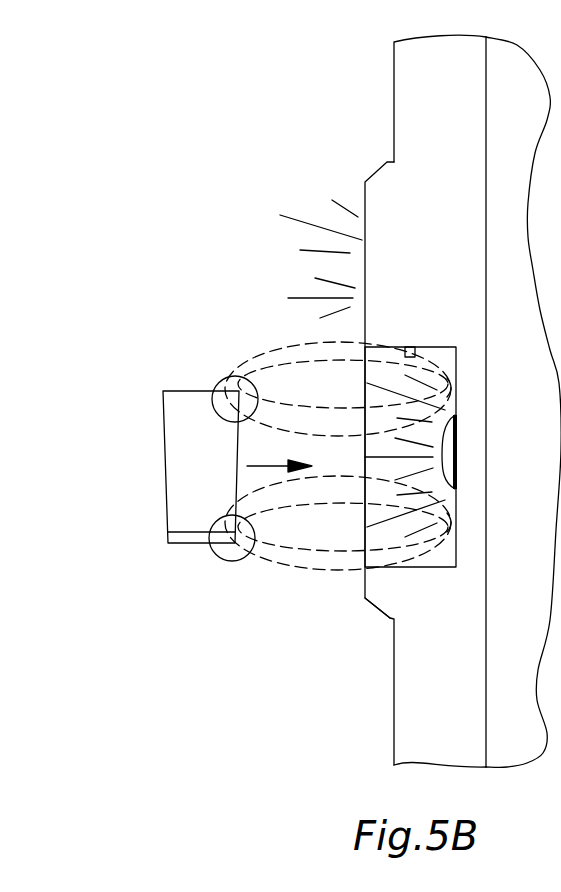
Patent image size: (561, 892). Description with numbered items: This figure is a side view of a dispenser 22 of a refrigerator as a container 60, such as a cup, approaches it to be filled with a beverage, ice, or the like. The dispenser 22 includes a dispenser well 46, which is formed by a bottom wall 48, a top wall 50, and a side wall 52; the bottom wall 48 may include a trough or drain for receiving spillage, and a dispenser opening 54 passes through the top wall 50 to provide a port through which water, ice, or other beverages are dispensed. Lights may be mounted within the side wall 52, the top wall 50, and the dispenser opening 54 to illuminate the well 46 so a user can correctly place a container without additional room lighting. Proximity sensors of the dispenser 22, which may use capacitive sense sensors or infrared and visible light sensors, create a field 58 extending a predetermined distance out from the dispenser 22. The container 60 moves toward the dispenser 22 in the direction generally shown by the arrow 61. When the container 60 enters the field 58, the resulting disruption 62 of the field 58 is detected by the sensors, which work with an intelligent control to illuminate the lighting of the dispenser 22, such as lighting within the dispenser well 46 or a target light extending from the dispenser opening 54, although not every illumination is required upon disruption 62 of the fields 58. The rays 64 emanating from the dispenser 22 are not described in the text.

The dispenser 22 is at (423, 347).
The dispenser well 46 is at (459, 457).
The bottom wall 48 is at (411, 565).
The top wall 50 is at (395, 347).
The side wall 52 is at (456, 513).
The dispenser opening 54 is at (415, 350).
The field 58 is at (288, 345).
The container 60 is at (175, 438).
The arrow 61 is at (268, 463).
The disruption 62 is at (222, 395).
The light rays 64 is at (300, 220).